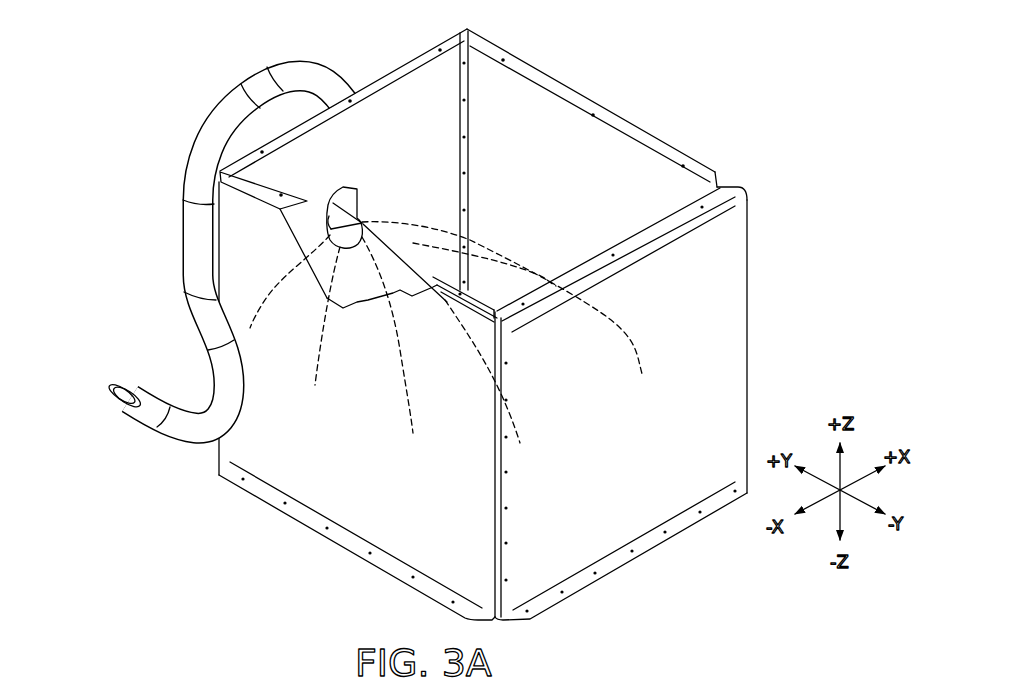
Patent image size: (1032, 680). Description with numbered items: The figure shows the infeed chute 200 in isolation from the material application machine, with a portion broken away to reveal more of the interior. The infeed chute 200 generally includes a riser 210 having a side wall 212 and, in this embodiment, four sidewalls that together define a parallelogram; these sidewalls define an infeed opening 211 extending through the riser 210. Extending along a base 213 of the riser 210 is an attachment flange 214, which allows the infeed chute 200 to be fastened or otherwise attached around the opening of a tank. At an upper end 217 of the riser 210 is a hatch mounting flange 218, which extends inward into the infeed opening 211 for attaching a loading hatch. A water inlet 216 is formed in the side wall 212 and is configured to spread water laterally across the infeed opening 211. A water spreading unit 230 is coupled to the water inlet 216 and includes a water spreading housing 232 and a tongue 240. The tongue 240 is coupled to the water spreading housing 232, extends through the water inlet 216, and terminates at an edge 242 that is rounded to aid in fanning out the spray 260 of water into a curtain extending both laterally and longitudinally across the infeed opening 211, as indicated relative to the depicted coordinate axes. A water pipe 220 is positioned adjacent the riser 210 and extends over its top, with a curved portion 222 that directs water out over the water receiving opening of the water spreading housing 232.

The infeed chute 200 is at (146, 45).
The riser 210 is at (590, 150).
The infeed opening 211 is at (592, 103).
The side wall 212 is at (431, 133).
The base 213 is at (296, 401).
The attachment flange 214 is at (641, 554).
The water inlet 216 is at (350, 189).
The upper end 217 is at (683, 402).
The hatch mounting flange 218 is at (710, 181).
The water pipe 220 is at (87, 290).
The curved portion 222 is at (300, 62).
The water spreading unit 230 is at (376, 91).
The water spreading housing 232 is at (347, 194).
The tongue 240 is at (360, 226).
The edge 242 is at (343, 246).
The spray 260 is at (502, 263).